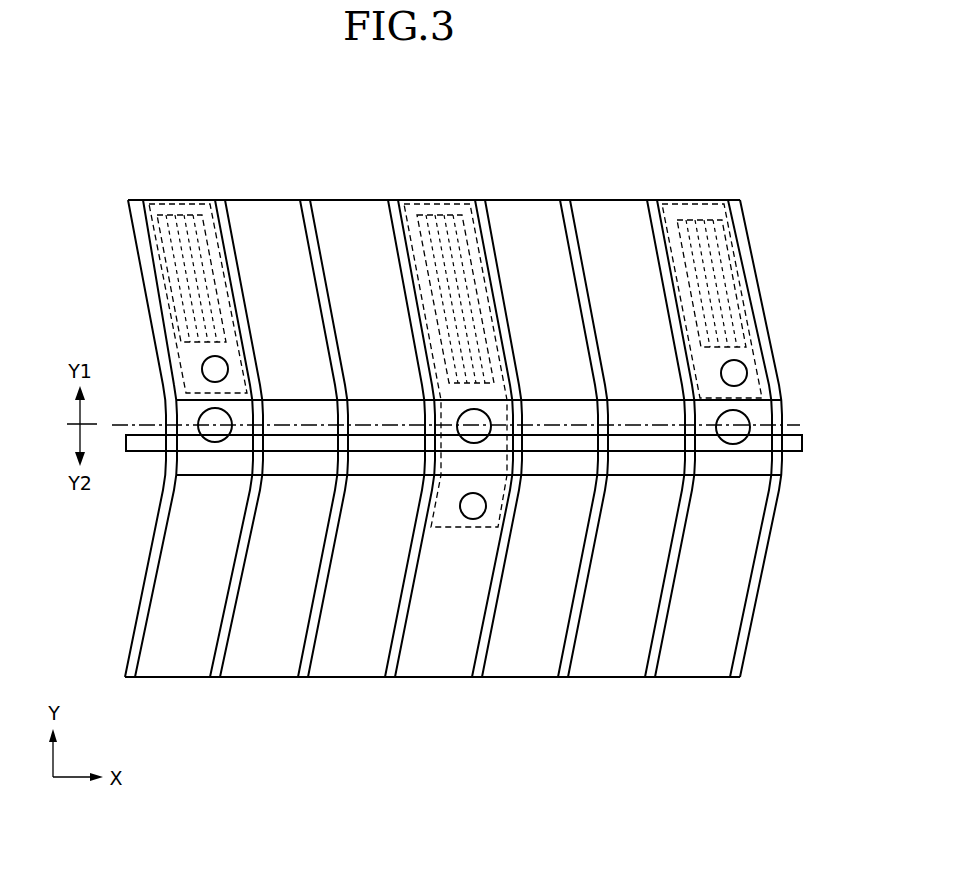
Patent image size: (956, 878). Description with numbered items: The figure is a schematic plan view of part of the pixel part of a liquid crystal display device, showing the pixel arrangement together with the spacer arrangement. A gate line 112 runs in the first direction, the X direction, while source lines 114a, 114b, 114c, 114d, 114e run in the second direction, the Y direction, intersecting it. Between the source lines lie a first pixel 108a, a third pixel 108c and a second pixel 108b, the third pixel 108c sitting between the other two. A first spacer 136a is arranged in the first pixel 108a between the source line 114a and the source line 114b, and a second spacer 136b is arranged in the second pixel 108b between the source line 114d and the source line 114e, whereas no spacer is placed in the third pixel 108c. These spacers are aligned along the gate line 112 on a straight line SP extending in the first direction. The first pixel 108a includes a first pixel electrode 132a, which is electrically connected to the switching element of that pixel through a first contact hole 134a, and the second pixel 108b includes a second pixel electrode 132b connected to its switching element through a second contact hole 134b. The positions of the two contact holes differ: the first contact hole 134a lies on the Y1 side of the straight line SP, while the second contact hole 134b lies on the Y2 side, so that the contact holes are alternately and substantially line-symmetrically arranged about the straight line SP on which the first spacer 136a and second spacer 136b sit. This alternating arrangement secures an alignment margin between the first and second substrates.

The first pixel 108a is at (219, 382).
The second pixel 108b is at (482, 382).
The third pixel 108c is at (345, 199).
The gate line 112 is at (152, 446).
The source line 114a is at (133, 678).
The source line 114b is at (217, 678).
The source line 114c is at (303, 678).
The source line 114d is at (390, 678).
The source line 114e is at (477, 678).
The first pixel electrode 132a is at (147, 199).
The second pixel electrode 132b is at (403, 199).
The first contact hole 134a is at (221, 362).
The second contact hole 134b is at (481, 513).
The first spacer 136a is at (217, 417).
The second spacer 136b is at (482, 416).
The straight line SP is at (472, 425).